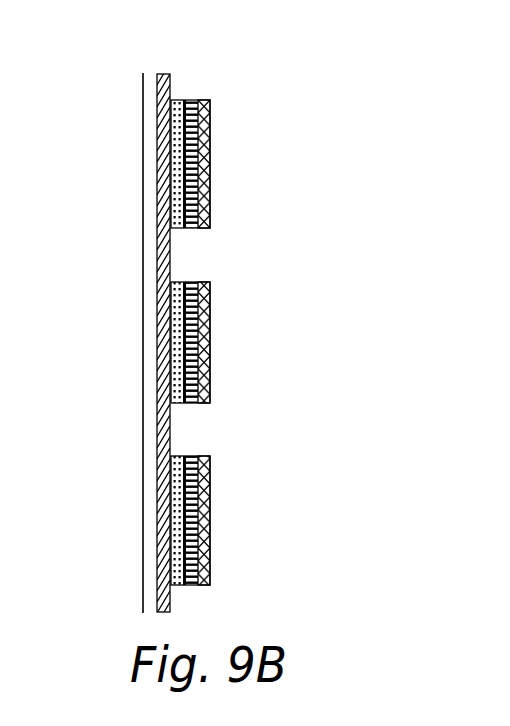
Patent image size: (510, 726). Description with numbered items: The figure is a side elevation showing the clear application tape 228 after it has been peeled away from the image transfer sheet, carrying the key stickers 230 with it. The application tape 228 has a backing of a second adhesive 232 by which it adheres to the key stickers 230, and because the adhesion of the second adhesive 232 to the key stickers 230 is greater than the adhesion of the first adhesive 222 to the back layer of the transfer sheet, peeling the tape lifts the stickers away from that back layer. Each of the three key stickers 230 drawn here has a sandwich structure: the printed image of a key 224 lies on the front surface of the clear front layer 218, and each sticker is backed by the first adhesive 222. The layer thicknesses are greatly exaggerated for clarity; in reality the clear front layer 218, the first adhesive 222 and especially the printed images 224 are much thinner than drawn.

The clear front layer 218 is at (195, 100).
The first adhesive 222 is at (210, 160).
The printed images of the individual keys 224 is at (178, 100).
The application tape 228 is at (143, 341).
The key stickers 230 is at (226, 192).
The second adhesive 232 is at (163, 74).